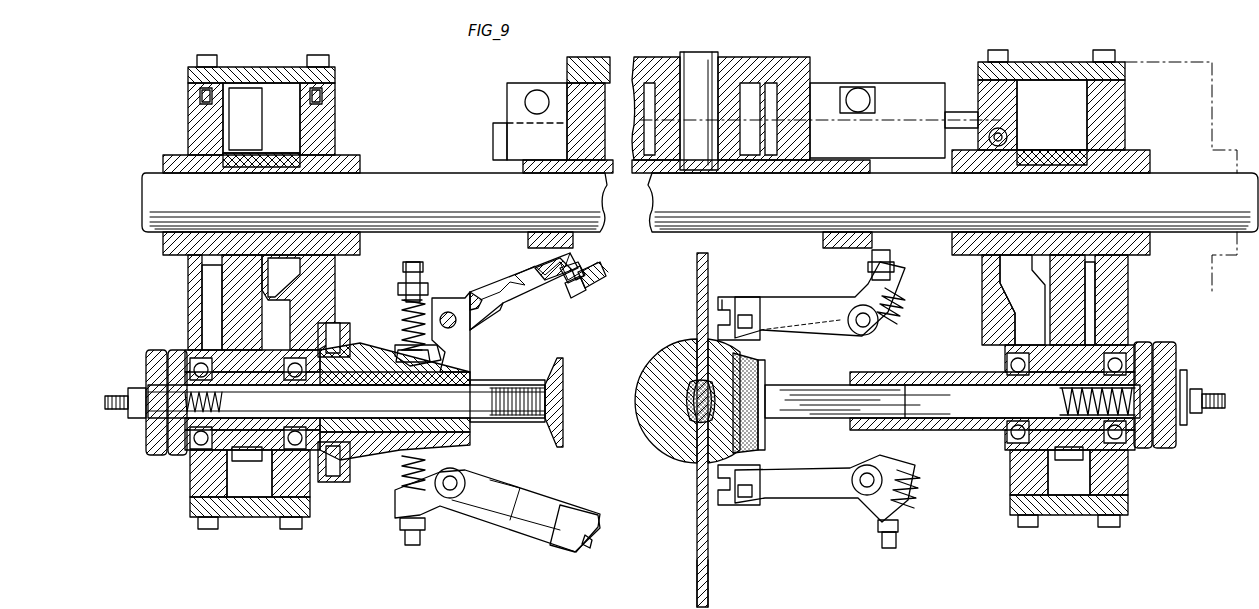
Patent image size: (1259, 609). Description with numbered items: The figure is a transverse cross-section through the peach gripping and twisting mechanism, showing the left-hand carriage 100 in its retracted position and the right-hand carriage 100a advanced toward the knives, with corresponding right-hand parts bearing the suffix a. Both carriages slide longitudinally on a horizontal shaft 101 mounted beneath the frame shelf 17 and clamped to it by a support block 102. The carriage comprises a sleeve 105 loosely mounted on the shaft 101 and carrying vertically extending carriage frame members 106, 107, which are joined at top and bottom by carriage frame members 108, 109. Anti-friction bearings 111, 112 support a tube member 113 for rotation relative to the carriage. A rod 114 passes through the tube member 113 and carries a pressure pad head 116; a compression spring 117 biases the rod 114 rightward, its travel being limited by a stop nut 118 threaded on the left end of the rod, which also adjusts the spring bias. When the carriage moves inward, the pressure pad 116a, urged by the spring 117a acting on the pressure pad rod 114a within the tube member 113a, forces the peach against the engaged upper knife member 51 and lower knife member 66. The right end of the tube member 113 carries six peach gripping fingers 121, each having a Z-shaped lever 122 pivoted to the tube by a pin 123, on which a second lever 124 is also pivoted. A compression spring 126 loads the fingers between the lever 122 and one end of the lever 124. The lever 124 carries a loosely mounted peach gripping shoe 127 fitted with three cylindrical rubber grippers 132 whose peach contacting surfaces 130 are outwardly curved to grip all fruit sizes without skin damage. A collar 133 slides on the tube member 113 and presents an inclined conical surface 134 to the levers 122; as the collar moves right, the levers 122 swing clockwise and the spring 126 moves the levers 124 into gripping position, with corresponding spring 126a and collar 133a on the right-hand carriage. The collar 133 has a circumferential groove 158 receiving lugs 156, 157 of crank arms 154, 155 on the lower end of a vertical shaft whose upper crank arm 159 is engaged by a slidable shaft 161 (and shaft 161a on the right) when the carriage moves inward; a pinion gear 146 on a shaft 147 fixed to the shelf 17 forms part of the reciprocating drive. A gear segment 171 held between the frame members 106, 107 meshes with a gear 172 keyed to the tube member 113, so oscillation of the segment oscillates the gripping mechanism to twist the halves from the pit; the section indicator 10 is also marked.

The carriage 100 is at (170, 56).
The carriage frame member 108 is at (259, 67).
The carriage frame member 106 is at (188, 119).
The carriage frame member 107 is at (327, 128).
The gear segment 171 is at (254, 136).
The sleeve 105 is at (357, 162).
The horizontal shaft 101 is at (452, 186).
The support block 102 is at (532, 234).
The anti-friction bearing 111 is at (222, 355).
The anti-friction bearing 112 is at (288, 356).
The groove 158 is at (318, 356).
The crank arm 154 is at (336, 323).
The crank arm 155 is at (322, 482).
The lug 156 is at (388, 355).
The lug 157 is at (345, 448).
The tube member 113 is at (470, 379).
The rod 114 is at (475, 405).
The compression spring 117 is at (510, 410).
The pressure pad head 116 is at (562, 385).
The stop nut 118 is at (140, 415).
The gear 172 is at (262, 448).
The carriage frame member 109 is at (237, 518).
The peach gripping finger 121 is at (466, 270).
The compression spring 126 is at (400, 323).
The inclined conical surface 134 is at (396, 357).
The pin 123 is at (465, 283).
The Z-shaped lever 122 is at (470, 340).
The second lever 124 is at (478, 293).
The peach gripping shoe 127 is at (561, 300).
The peach contacting surface 130 is at (568, 290).
The cylindrical rubber gripper 132 is at (592, 284).
The section line 10 is at (578, 233).
The collar 133 is at (362, 461).
The shaft 161 is at (525, 102).
The shaft 147 is at (698, 53).
The pinion gear 146 is at (730, 78).
The crank arm 159 is at (905, 86).
The shaft 161a is at (858, 88).
The shelf 17 is at (828, 163).
The carriage 100a is at (1078, 56).
The upper knife member 51 is at (708, 279).
The lower knife member 66 is at (708, 576).
The pressure pad 116a is at (766, 441).
The tube member 113a is at (853, 379).
The pressure pad rod 114a is at (816, 412).
The spring 117a is at (1060, 399).
The compression spring 126a is at (811, 295).
The collar 133a is at (819, 501).